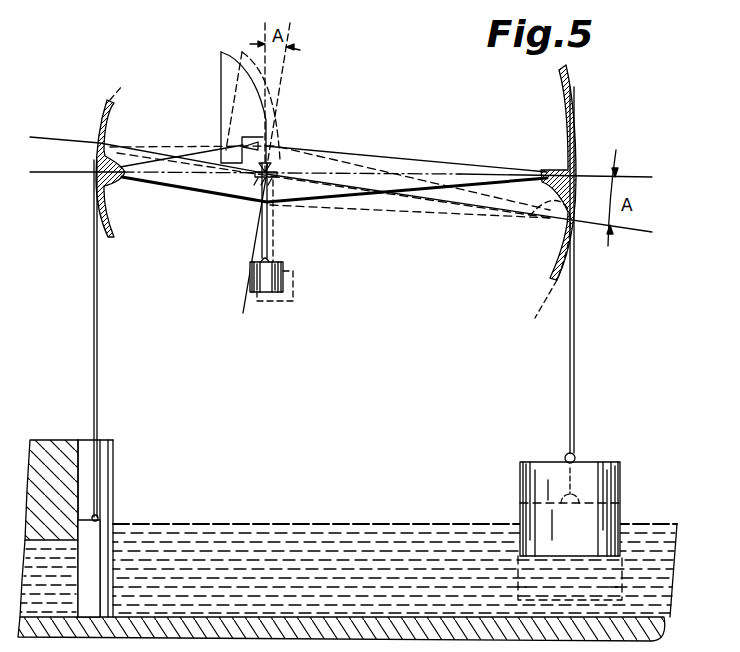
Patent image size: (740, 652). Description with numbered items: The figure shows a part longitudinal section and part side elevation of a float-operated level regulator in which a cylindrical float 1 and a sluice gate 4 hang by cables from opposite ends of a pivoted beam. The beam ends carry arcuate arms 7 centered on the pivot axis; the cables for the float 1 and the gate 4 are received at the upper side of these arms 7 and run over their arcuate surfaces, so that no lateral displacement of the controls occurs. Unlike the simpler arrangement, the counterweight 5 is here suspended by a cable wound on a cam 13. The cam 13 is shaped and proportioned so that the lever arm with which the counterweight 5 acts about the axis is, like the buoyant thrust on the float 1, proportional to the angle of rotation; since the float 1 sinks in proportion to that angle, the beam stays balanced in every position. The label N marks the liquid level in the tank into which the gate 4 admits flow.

The float 1 is at (603, 477).
The sluice gate 4 is at (83, 567).
The counterweight 5 is at (284, 294).
The arcuate arms 7 is at (113, 126).
The cam 13 is at (275, 88).
The liquid level N is at (409, 523).